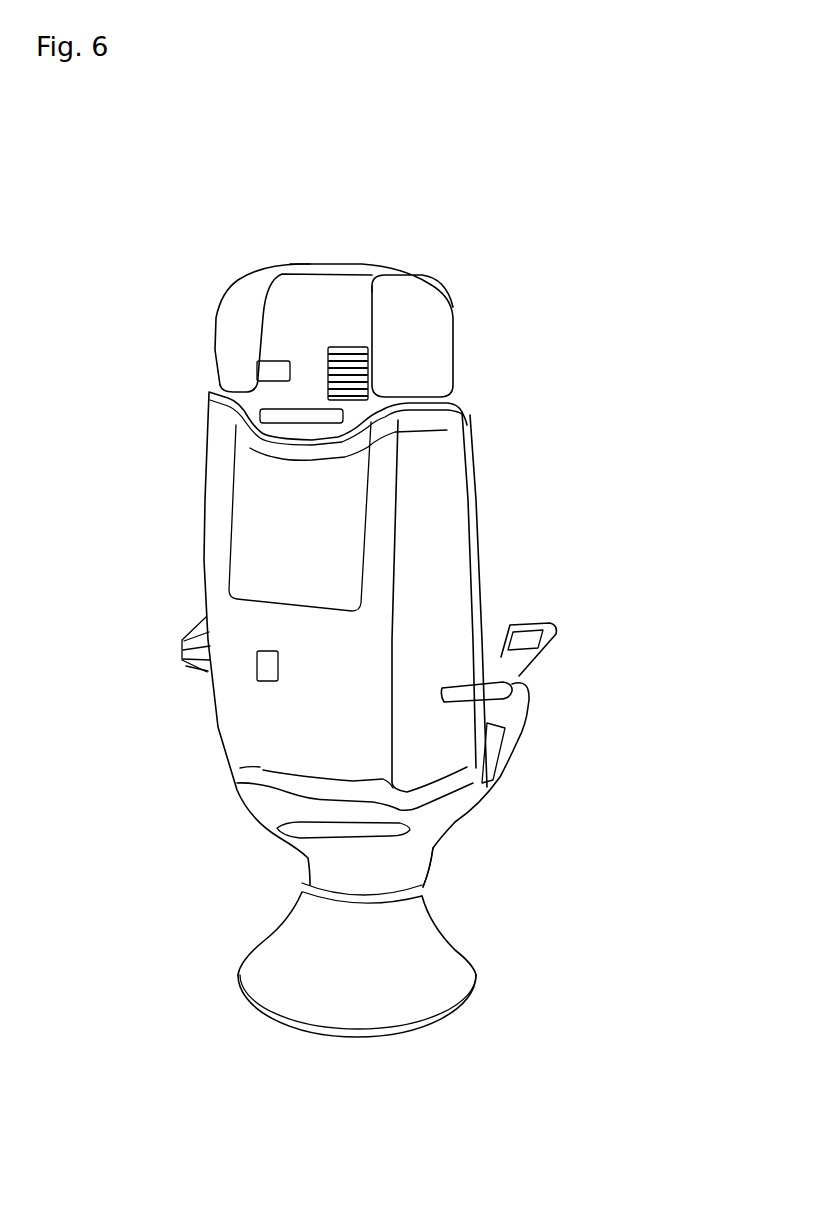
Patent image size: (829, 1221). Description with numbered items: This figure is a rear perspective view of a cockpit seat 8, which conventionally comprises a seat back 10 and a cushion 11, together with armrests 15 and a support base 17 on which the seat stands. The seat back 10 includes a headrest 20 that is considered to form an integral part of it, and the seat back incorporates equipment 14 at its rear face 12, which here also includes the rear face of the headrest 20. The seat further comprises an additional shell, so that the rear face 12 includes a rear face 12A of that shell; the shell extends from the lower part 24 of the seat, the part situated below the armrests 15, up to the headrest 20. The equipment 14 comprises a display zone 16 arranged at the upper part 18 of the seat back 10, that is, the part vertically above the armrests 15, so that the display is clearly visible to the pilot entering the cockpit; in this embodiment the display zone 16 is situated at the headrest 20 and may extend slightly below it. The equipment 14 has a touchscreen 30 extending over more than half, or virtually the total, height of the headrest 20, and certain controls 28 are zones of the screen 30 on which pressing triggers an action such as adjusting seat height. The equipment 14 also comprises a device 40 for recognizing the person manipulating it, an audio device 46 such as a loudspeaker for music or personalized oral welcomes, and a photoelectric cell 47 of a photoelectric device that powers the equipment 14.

The cockpit seat 8 is at (503, 263).
The seat back 10 is at (215, 456).
The cushion 11 is at (520, 690).
The rear face 12 is at (408, 577).
The rear face of the shell 12A is at (408, 503).
The equipment 14 is at (262, 314).
The armrests 15 is at (180, 657).
The display zone 16 is at (359, 309).
The support base 17 is at (283, 965).
The upper part 18 is at (503, 348).
The headrest 20 is at (433, 312).
The lower part 24 is at (530, 831).
The controls 28 is at (298, 262).
The touchscreen 30 is at (329, 290).
The recognition device 40 is at (270, 370).
The audio device 46 is at (368, 378).
The photoelectric cell 47 is at (260, 664).